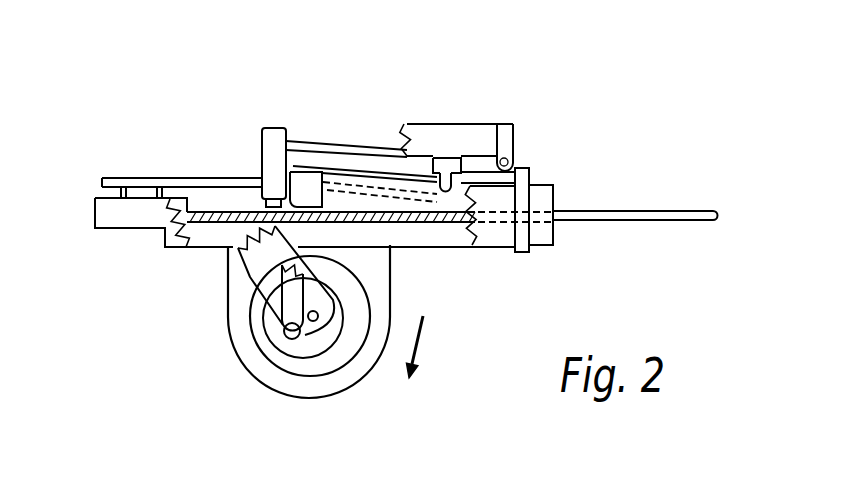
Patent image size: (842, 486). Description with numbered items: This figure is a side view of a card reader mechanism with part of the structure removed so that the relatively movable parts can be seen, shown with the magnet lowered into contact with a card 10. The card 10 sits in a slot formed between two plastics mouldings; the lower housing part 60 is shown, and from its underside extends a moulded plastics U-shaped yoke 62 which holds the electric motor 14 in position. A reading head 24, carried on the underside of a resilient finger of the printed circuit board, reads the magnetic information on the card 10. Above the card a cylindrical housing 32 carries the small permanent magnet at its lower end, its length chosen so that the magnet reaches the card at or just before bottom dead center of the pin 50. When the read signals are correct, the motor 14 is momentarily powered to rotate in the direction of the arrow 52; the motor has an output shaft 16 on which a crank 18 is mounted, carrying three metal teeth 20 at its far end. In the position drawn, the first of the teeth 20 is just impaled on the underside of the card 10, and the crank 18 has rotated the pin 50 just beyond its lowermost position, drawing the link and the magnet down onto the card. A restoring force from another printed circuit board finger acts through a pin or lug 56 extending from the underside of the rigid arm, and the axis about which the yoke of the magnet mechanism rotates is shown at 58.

The card 10 is at (623, 210).
The electric motor 14 is at (289, 398).
The output shaft 16 is at (338, 332).
The crank 18 is at (268, 270).
The metal teeth 20 is at (255, 262).
The reading head 24 is at (300, 187).
The cylindrical housing 32 is at (268, 142).
The pin 50 is at (287, 336).
The arrow 52 is at (432, 347).
The pin or lug 56 is at (430, 157).
The axis 58 is at (501, 123).
The lower housing part 60 is at (437, 237).
The U-shaped yoke 62 is at (366, 376).